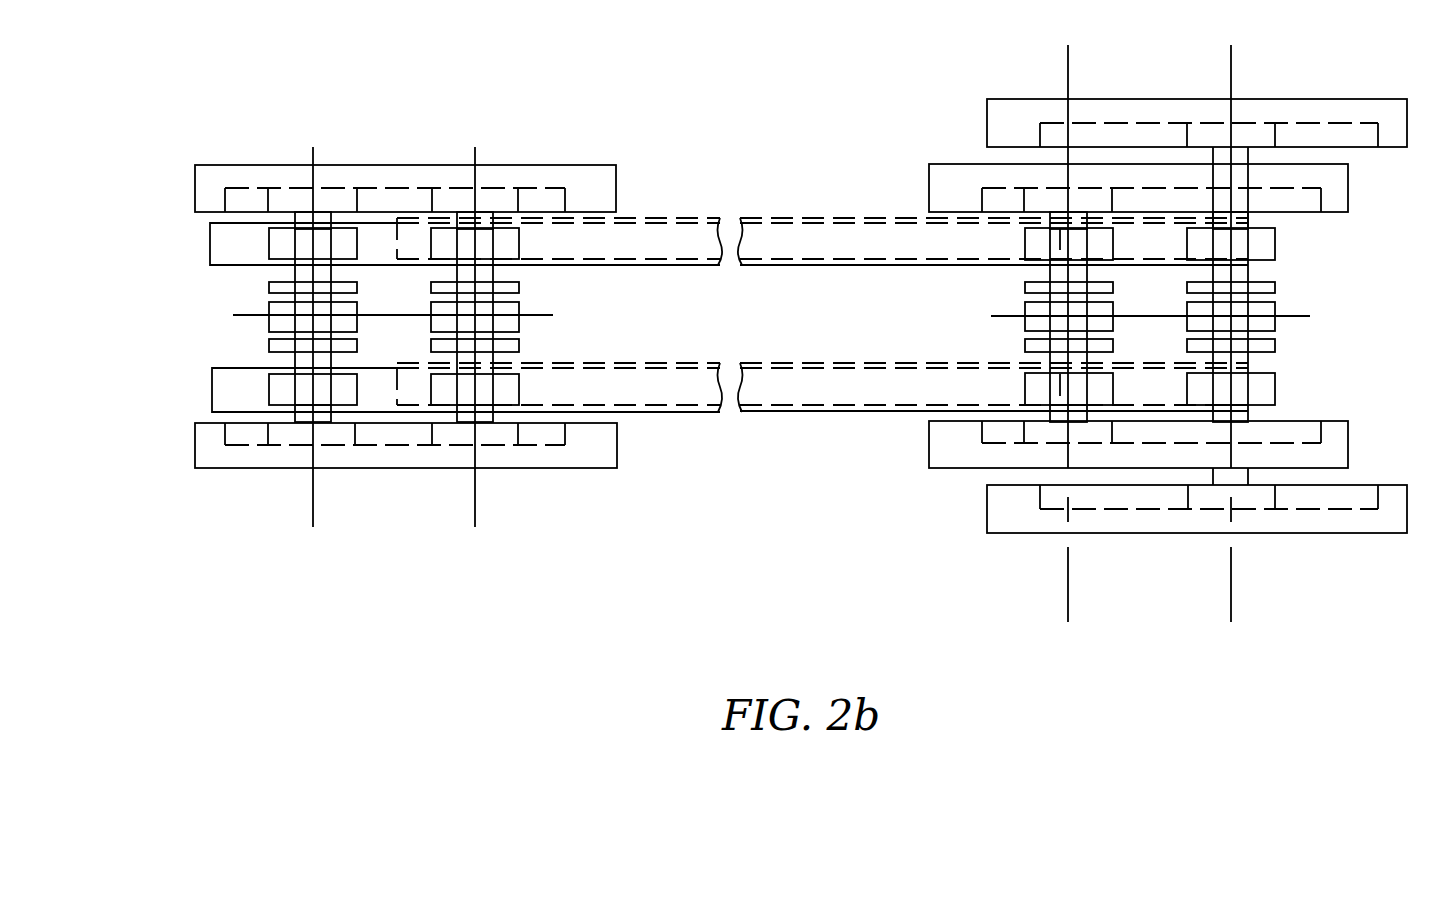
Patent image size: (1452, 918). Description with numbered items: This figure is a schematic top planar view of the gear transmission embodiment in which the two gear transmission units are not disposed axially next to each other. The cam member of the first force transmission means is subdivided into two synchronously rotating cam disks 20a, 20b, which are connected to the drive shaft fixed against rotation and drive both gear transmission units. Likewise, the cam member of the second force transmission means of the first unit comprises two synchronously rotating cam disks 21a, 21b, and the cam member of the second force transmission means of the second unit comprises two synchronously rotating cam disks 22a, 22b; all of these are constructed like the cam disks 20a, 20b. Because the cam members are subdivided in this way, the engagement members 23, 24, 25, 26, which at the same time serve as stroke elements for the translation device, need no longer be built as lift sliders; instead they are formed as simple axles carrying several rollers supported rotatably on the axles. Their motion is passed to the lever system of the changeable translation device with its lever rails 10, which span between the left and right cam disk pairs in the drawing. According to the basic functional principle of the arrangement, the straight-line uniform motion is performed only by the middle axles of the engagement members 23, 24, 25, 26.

The lever rails 10 is at (778, 385).
The cam disk 20a is at (592, 183).
The cam disk 20b is at (592, 447).
The cam disk 21a is at (942, 187).
The cam disk 21b is at (943, 455).
The cam disk 22a is at (997, 116).
The cam disk 22b is at (1012, 517).
The engagement member 23 is at (292, 323).
The engagement member 24 is at (508, 322).
The engagement member 25 is at (1033, 320).
The engagement member 26 is at (1262, 313).